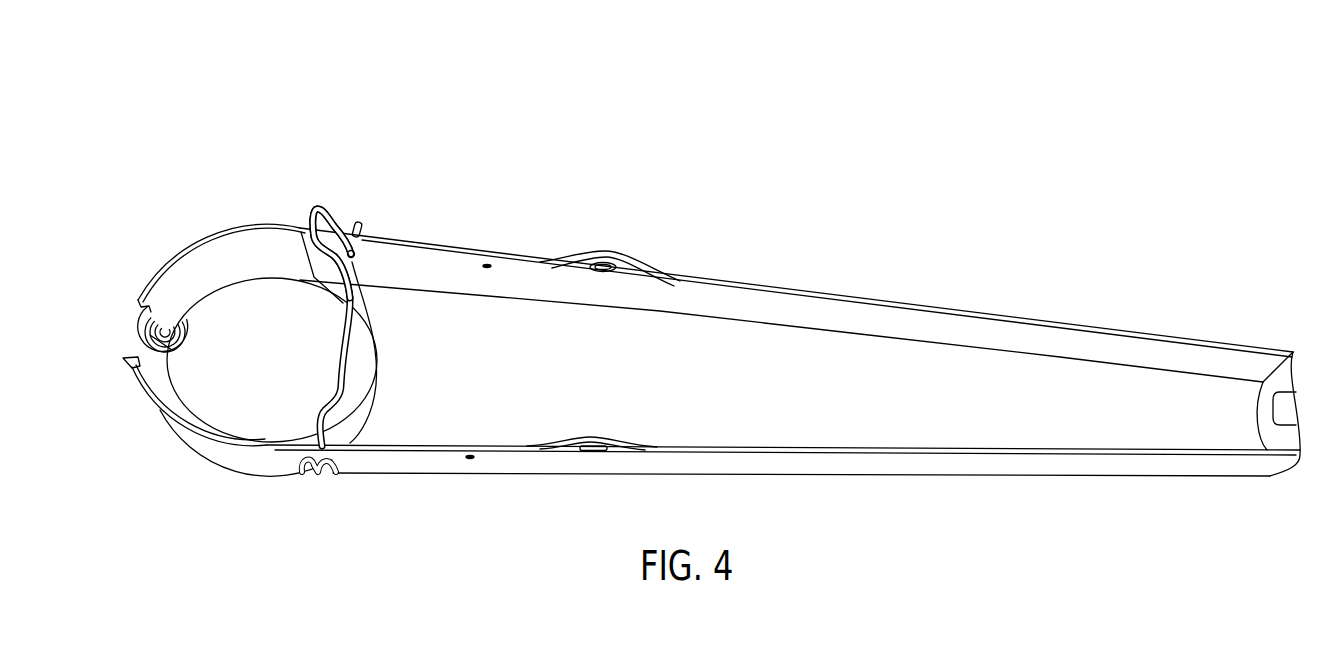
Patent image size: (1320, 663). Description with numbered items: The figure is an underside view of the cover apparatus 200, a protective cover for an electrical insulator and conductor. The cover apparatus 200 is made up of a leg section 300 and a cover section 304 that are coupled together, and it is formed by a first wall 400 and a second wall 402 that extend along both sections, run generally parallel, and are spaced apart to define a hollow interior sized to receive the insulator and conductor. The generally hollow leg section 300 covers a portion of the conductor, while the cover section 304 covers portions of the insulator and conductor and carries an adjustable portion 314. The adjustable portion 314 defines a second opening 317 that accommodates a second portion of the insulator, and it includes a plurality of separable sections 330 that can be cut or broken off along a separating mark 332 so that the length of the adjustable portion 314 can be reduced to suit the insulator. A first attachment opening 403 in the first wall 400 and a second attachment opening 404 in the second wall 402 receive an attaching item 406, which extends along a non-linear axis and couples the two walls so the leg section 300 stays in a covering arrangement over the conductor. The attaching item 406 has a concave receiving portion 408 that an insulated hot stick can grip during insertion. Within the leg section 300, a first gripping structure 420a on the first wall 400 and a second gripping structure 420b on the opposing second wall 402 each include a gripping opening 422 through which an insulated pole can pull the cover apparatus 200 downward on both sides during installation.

The cover apparatus 200 is at (570, 83).
The leg section 300 is at (890, 360).
The cover section 304 is at (213, 417).
The adjustable portion 314 is at (128, 368).
The second opening 317 is at (137, 338).
The separable sections 330 is at (143, 326).
The separating mark 332 is at (137, 298).
The first wall 400 is at (775, 465).
The second wall 402 is at (778, 297).
The first attachment opening 403 is at (363, 232).
The second attachment opening 404 is at (333, 472).
The attaching item 406 is at (347, 340).
The concave receiving portion 408 is at (318, 212).
The first gripping structure 420a is at (582, 455).
The second gripping structure 420b is at (598, 262).
The gripping opening 422 is at (614, 262).